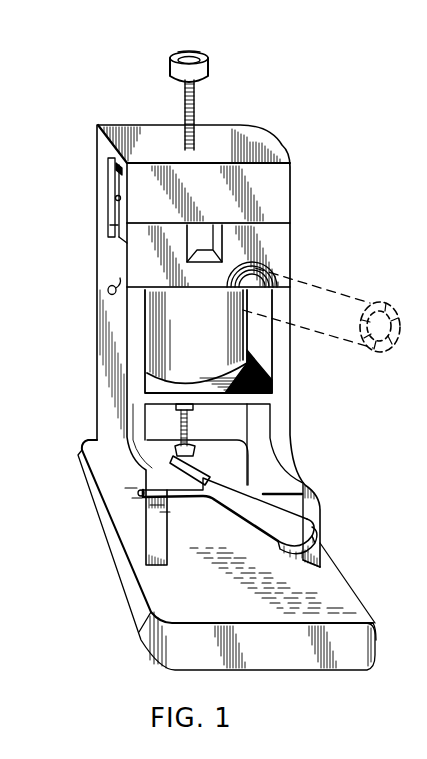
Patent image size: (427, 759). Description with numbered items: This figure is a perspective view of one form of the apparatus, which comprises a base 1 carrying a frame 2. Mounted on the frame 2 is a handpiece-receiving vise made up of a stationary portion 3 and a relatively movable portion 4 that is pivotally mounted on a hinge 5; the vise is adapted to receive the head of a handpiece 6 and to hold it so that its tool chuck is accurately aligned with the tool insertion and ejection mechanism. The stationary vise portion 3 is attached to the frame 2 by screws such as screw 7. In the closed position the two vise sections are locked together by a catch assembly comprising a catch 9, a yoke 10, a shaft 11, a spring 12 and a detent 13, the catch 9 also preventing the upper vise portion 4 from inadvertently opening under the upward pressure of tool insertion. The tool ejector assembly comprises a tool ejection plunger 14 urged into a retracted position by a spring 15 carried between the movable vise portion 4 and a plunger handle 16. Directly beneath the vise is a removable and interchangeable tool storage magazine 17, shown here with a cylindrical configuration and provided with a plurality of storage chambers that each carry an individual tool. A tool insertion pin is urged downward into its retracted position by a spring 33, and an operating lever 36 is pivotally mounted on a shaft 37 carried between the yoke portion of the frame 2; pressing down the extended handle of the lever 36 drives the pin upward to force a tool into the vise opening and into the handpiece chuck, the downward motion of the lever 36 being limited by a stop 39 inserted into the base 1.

The base 1 is at (348, 612).
The frame 2 is at (283, 375).
The stationary portion of vise 3 is at (275, 243).
The movable portion of vise 4 is at (277, 193).
The hinge 5 is at (106, 178).
The handpiece 6 is at (328, 303).
The screw 7 is at (108, 291).
The catch 9 is at (112, 224).
The yoke 10 is at (187, 248).
The shaft 11 is at (122, 199).
The spring 12 is at (125, 166).
The detent 13 is at (125, 243).
The tool ejection plunger 14 is at (197, 120).
The spring 15 is at (196, 100).
The plunger handle 16 is at (200, 56).
The tool storage magazine 17 is at (200, 329).
The spring 33 is at (192, 432).
The operating lever 36 is at (292, 524).
The shaft 37 is at (138, 493).
The stop 39 is at (182, 487).